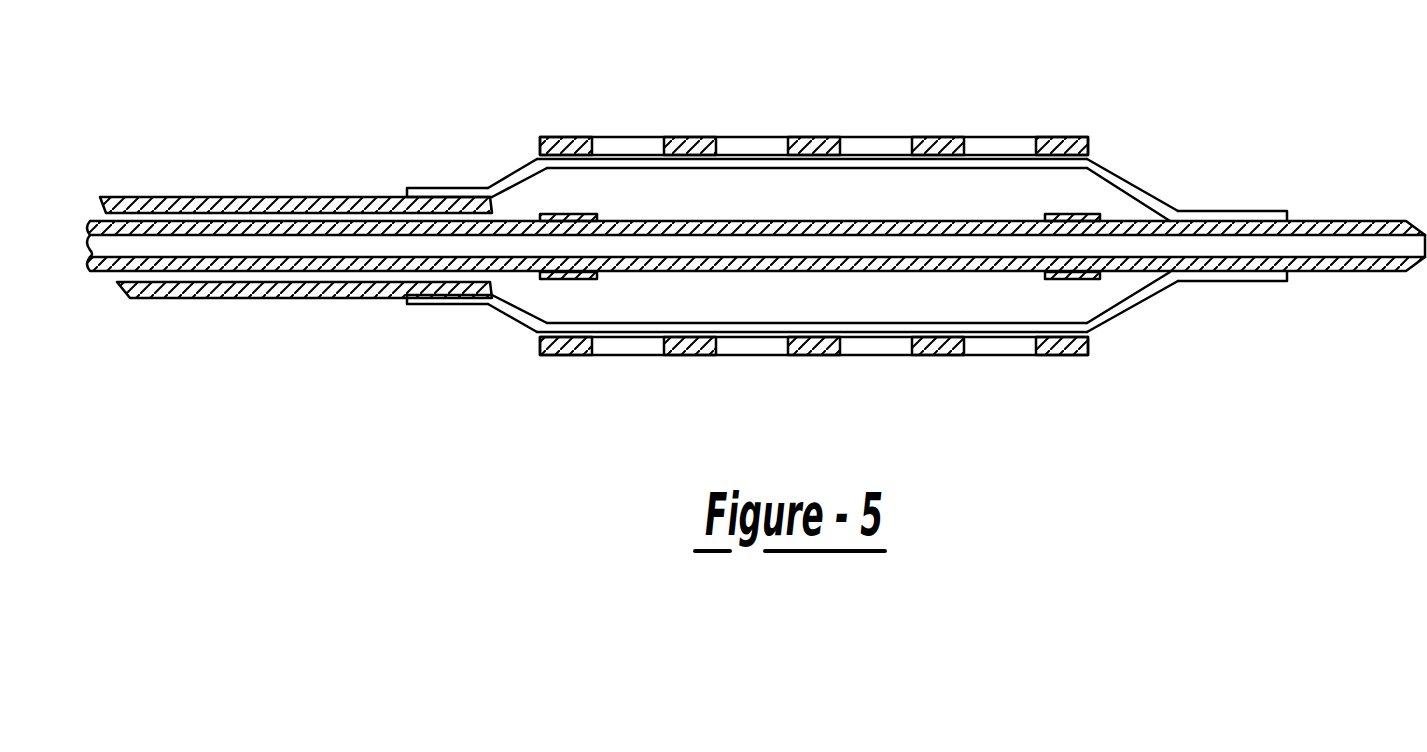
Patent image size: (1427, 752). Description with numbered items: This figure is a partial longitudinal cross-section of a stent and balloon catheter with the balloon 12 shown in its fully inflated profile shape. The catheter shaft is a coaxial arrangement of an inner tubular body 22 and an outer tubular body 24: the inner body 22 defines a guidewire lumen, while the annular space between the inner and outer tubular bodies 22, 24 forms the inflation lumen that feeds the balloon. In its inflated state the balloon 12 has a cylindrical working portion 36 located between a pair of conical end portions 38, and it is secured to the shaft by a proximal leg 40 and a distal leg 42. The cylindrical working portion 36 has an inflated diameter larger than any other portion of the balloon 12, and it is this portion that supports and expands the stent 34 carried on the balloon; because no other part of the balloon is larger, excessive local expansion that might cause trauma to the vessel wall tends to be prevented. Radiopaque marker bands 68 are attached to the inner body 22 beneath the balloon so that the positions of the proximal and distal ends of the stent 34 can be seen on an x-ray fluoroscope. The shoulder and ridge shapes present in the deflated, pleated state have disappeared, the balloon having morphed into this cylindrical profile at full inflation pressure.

The balloon 12 is at (851, 251).
The inner tubular body 22 is at (105, 273).
The outer tubular body 24 is at (178, 197).
The stent 34 is at (812, 137).
The cylindrical working portion 36 is at (815, 323).
The conical end portions 38 is at (508, 170).
The proximal leg 40 is at (440, 306).
The distal leg 42 is at (1246, 212).
The marker bands 68 is at (555, 281).